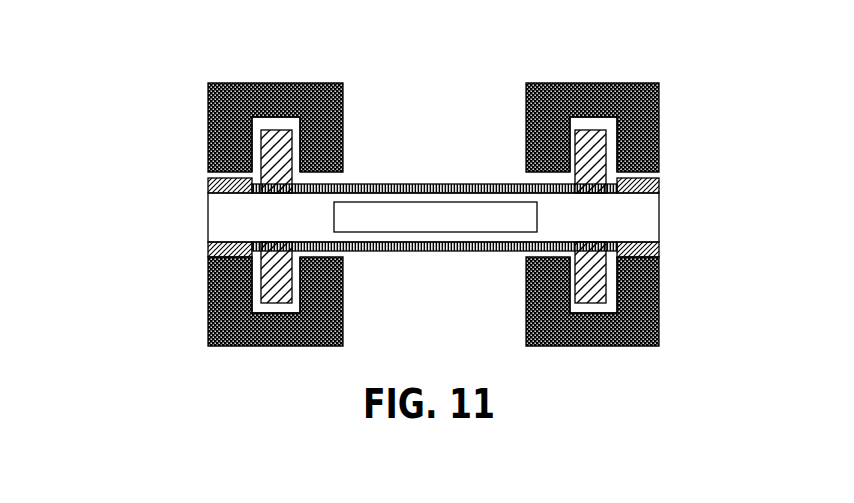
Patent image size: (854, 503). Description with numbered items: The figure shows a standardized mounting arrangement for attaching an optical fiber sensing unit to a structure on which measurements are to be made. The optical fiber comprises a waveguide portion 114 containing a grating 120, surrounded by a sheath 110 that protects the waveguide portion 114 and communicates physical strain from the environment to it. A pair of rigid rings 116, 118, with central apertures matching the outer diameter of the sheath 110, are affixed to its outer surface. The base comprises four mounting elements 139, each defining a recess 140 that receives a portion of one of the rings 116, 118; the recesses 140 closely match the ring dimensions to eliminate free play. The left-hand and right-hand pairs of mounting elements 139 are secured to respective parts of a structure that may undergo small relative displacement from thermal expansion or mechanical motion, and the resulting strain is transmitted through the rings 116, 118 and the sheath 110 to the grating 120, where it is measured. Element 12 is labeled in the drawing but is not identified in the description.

The cladding layer 12 is at (662, 252).
The sheath 110 is at (212, 248).
The waveguide portion 114 is at (645, 218).
The ring 116 is at (588, 140).
The ring 118 is at (278, 140).
The grating 120 is at (500, 216).
The mounting element 139 is at (229, 95).
The recess 140 is at (255, 127).